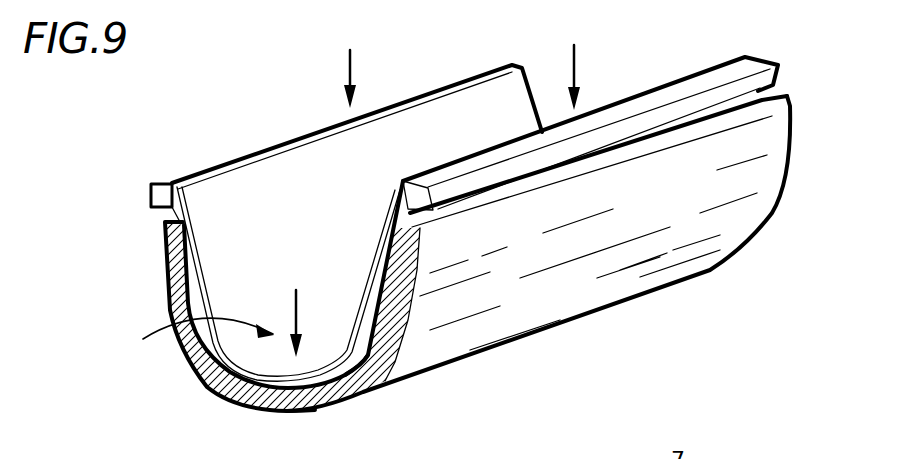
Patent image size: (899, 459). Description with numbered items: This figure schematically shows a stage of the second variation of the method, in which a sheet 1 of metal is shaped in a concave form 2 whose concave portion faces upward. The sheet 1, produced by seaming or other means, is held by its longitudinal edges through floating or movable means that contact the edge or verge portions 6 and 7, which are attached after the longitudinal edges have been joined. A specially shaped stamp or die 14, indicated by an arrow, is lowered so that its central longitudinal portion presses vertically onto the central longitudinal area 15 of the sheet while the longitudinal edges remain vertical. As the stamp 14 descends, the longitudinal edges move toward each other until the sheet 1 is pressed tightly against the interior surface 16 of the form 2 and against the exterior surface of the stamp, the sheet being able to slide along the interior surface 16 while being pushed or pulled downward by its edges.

The sheet of metal 1 is at (298, 172).
The form 2 is at (497, 327).
The edge or verge portion 6 is at (148, 187).
The edge or verge portion 7 is at (720, 95).
The stamp or die 14 is at (192, 336).
The central longitudinal area 15 is at (330, 383).
The interior surface 16 is at (301, 412).